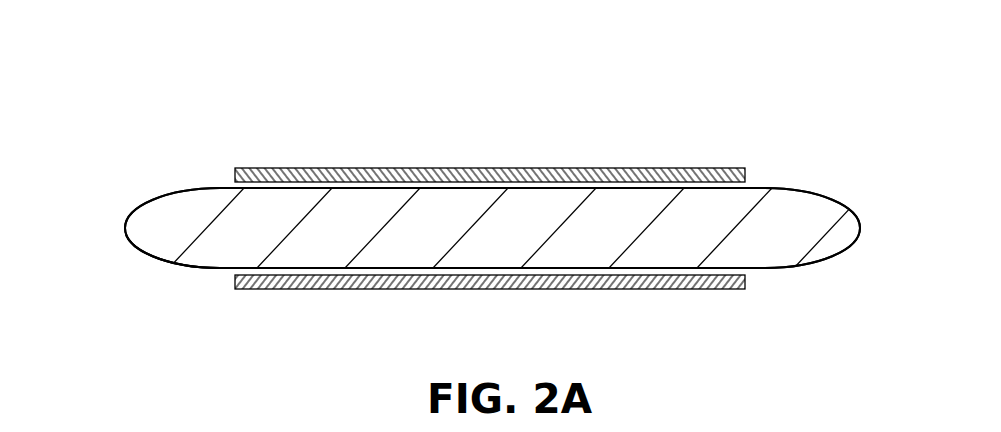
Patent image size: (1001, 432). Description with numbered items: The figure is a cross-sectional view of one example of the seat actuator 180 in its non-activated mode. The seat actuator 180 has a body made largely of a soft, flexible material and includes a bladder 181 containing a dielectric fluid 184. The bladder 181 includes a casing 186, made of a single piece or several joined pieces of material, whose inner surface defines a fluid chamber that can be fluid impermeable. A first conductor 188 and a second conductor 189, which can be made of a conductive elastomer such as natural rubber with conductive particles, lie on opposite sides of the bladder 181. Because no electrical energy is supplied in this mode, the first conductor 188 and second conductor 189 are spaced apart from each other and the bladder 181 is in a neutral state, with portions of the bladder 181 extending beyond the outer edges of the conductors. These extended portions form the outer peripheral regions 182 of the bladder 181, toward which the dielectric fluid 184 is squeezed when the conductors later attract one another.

The seat actuator 180 is at (482, 185).
The bladder 181 is at (149, 266).
The outer peripheral region 182 is at (96, 206).
The dielectric fluid 184 is at (190, 213).
The casing 186 is at (181, 267).
The first conductor 188 is at (326, 168).
The second conductor 189 is at (318, 290).